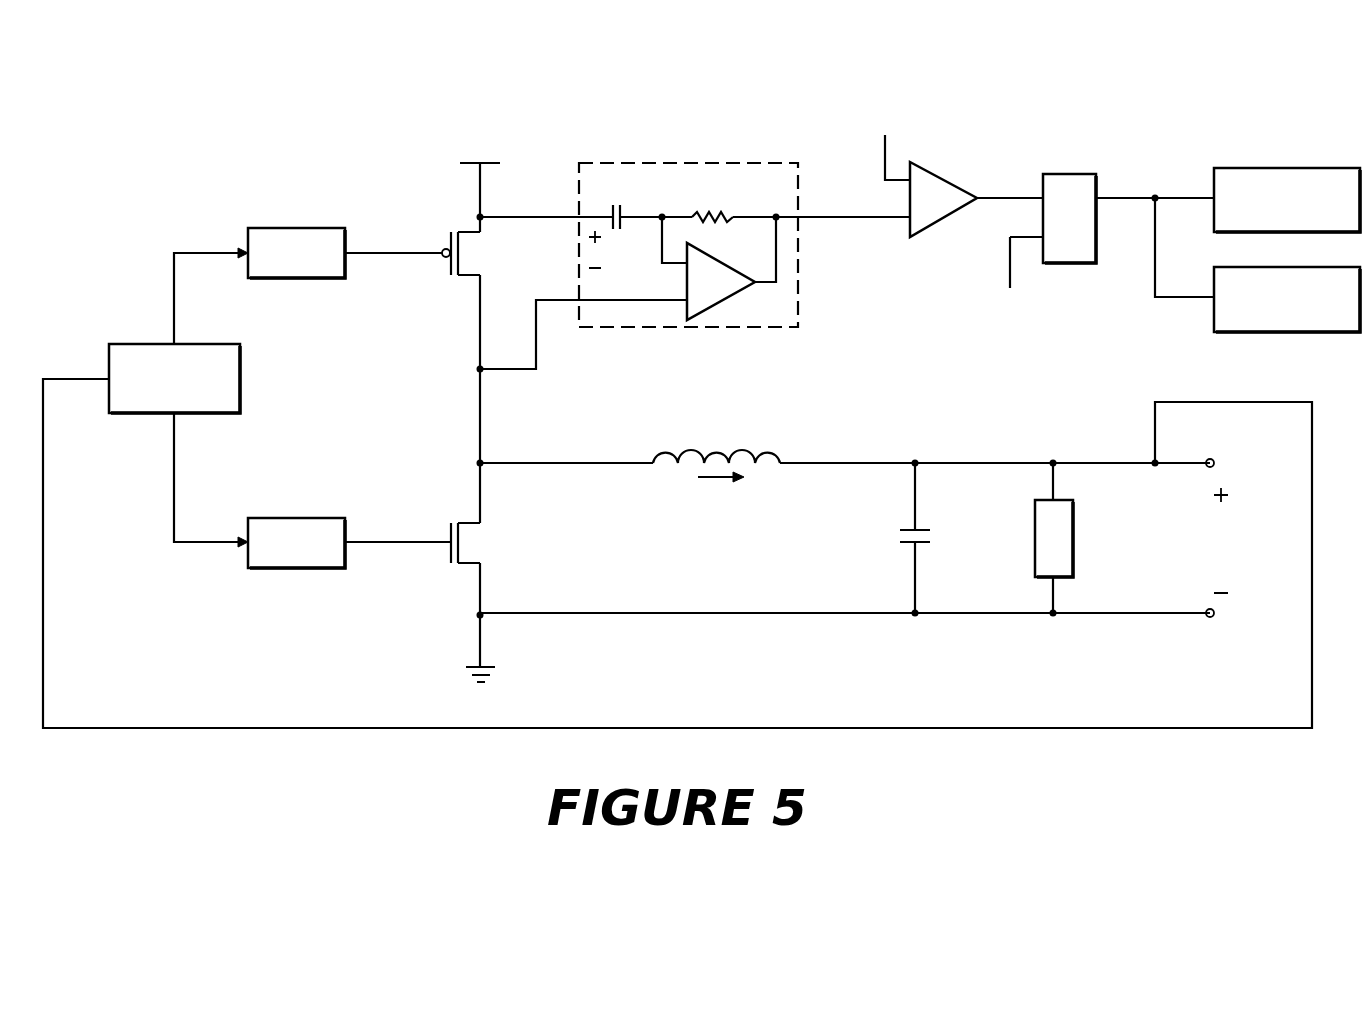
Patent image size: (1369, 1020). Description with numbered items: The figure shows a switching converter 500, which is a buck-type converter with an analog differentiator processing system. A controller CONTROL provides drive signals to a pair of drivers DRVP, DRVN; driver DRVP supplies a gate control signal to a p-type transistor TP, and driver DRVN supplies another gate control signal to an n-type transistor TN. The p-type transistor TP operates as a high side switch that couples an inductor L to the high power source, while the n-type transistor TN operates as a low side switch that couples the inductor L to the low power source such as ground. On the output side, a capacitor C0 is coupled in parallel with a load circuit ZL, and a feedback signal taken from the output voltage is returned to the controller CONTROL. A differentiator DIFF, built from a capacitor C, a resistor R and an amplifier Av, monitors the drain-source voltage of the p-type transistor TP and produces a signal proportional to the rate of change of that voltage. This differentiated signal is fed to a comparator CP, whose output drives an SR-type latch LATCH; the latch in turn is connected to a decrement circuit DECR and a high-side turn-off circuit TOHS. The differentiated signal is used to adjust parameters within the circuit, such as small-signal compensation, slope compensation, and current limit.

The switching converter 500 is at (130, 163).
The controller CONTROL is at (174, 378).
The driver DRVP is at (296, 253).
The driver DRVN is at (296, 543).
The p-type transistor TP is at (476, 253).
The n-type transistor TN is at (481, 543).
The differentiator DIFF is at (688, 231).
The capacitor C is at (618, 203).
The resistor R is at (712, 203).
The amplifier Av is at (721, 281).
The comparator CP is at (943, 199).
The SR-type latch LATCH is at (1068, 203).
The decrement circuit DECR is at (1287, 185).
The high-side turn-off circuit TOHS is at (1287, 314).
The inductor L is at (716, 442).
The capacitor C0 is at (938, 538).
The load circuit ZL is at (1077, 538).